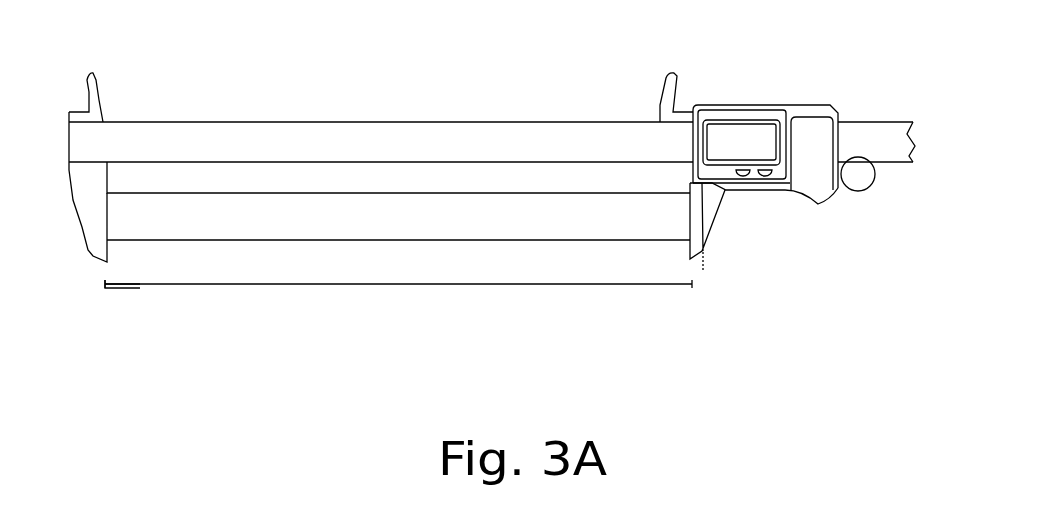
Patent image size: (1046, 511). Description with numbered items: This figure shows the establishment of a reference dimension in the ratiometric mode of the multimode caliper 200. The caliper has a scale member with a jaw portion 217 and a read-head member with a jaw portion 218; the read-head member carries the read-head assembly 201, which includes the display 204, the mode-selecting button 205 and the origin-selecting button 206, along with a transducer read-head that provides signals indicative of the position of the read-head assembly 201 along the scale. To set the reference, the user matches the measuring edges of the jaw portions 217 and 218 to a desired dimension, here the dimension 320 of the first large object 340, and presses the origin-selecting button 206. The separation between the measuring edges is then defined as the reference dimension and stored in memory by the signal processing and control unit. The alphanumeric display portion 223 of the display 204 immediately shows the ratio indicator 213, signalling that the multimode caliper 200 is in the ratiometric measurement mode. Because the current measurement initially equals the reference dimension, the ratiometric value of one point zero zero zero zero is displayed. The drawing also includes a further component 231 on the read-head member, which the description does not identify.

The multimode caliper 200 is at (838, 70).
The read-head assembly 201 is at (714, 98).
The display 204 is at (421, 274).
The mode-selecting button 205 is at (742, 178).
The origin-selecting button 206 is at (764, 178).
The ratio indicator 213 is at (767, 126).
The jaw portion 217 is at (103, 84).
The jaw portion 218 is at (674, 80).
The alphanumeric display portion 223 is at (714, 143).
The thumb roller 231 is at (797, 104).
The dimension 320 is at (107, 285).
The first large object 340 is at (177, 242).